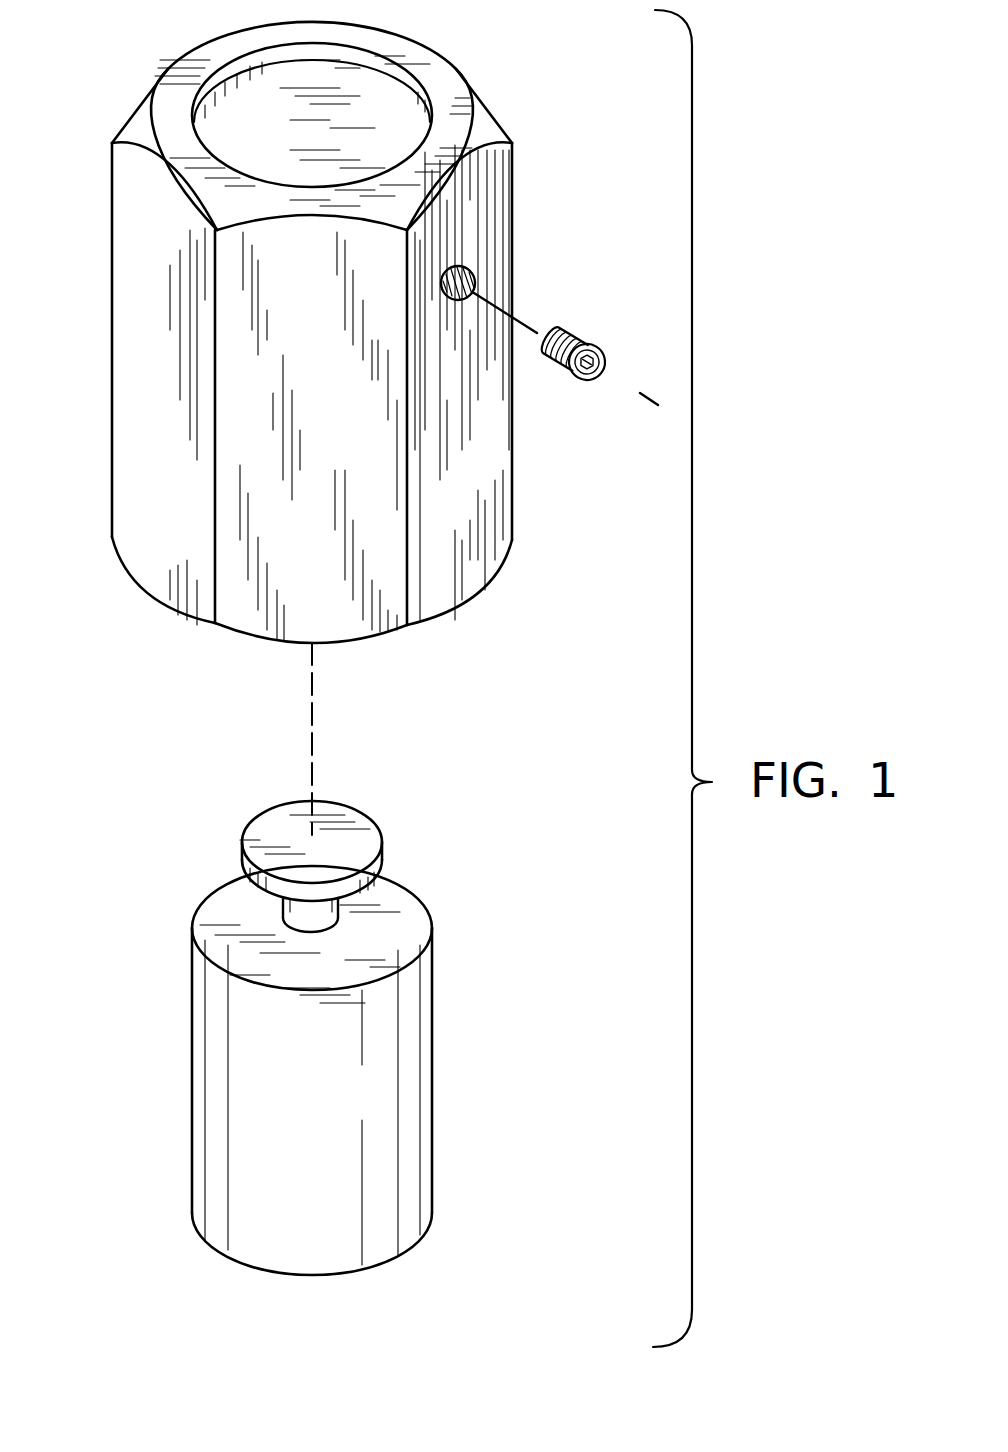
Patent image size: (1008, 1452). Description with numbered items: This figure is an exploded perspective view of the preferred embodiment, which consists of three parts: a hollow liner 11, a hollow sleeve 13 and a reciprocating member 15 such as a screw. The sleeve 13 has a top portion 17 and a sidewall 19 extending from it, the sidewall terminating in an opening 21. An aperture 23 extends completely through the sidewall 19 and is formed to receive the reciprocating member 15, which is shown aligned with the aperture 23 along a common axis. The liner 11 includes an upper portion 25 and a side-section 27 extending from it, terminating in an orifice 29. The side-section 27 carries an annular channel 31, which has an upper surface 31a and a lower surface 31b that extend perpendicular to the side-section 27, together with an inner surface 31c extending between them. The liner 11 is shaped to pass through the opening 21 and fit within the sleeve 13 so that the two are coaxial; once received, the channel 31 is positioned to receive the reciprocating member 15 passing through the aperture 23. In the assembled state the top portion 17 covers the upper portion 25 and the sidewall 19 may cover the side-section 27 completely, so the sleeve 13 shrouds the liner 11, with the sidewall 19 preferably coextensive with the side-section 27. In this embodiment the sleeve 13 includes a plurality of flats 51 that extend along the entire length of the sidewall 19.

The hollow liner 11 is at (343, 786).
The hollow sleeve 13 is at (118, 33).
The reciprocating member 15 is at (582, 343).
The top portion 17 is at (372, 100).
The sidewall 19 is at (112, 227).
The opening 21 is at (230, 662).
The aperture 23 is at (470, 272).
The upper portion 25 is at (265, 823).
The side-section 27 is at (472, 800).
The orifice 29 is at (257, 1308).
The annular channel 31 is at (283, 930).
The upper surface 31a is at (375, 884).
The lower surface 31b is at (412, 921).
The inner surface 31c is at (330, 913).
The flats 51 is at (159, 520).